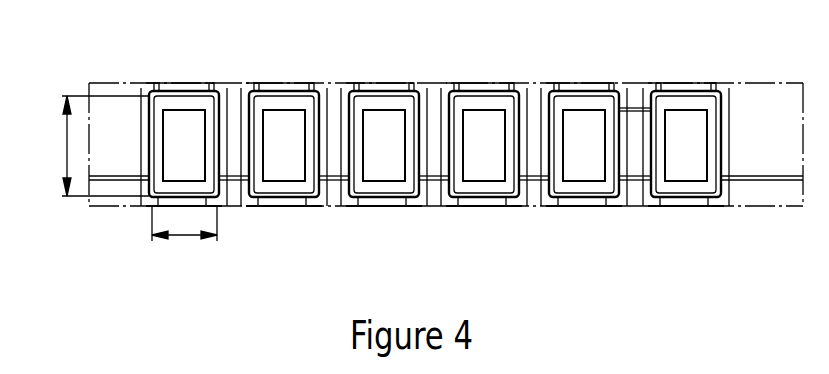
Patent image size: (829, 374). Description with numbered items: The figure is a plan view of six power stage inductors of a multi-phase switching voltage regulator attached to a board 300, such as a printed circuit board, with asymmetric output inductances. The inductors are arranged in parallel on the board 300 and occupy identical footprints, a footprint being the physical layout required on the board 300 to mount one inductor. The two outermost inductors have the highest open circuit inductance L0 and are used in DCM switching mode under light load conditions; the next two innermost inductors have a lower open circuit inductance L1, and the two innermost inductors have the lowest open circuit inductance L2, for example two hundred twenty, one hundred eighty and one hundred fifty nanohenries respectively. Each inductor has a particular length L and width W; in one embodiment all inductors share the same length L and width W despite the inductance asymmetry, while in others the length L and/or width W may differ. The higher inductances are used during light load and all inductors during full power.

The board 300 is at (745, 82).
The highest open circuit inductance L0 is at (435, 144).
The lower open circuit inductance L1 is at (434, 144).
The lowest open circuit inductance L2 is at (434, 144).
The length L is at (65, 143).
The width W is at (185, 240).